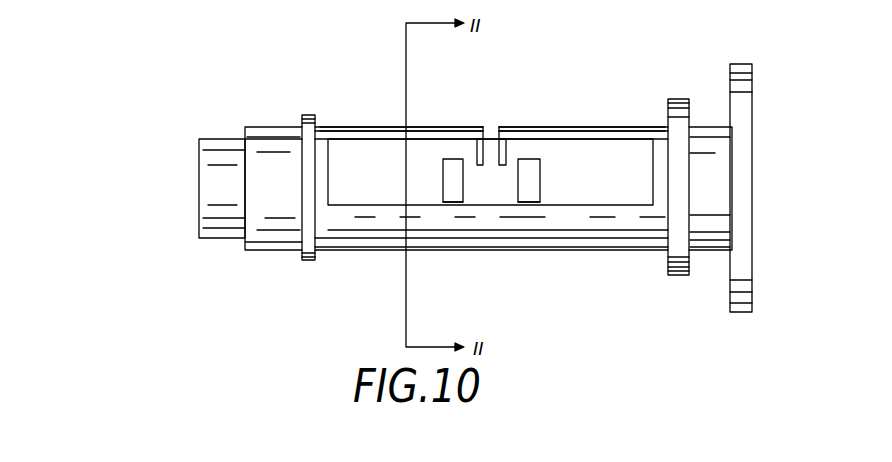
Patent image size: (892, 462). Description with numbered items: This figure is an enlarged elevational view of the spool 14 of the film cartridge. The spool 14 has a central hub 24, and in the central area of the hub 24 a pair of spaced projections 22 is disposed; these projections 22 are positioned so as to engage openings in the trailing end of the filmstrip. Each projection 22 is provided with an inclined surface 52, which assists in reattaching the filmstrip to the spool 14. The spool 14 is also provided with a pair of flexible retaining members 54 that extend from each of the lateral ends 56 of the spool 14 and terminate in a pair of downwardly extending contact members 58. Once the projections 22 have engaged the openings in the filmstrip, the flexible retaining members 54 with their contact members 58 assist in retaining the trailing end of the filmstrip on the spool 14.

The spool 14 is at (214, 56).
The hub 24 is at (313, 126).
The lateral ends 56 is at (318, 127).
The flexible retaining members 54 is at (388, 127).
The contact members 58 is at (477, 155).
The projections 22 is at (540, 163).
The inclined surface 52 is at (455, 192).